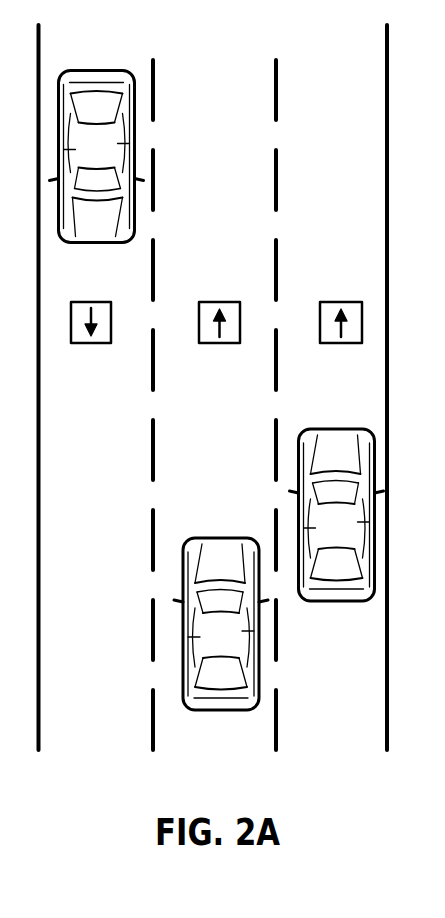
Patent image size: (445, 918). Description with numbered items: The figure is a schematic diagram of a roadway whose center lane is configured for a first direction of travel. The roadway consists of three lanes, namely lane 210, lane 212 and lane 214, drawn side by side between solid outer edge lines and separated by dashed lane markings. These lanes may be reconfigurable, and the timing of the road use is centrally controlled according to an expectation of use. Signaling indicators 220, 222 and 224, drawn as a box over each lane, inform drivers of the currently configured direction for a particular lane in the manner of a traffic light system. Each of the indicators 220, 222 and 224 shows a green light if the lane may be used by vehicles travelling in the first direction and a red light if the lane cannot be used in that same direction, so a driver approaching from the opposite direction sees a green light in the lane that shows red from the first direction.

The lane 210 is at (97, 725).
The lane 212 is at (222, 725).
The lane 214 is at (343, 725).
The indicator 220 is at (92, 343).
The indicator 222 is at (223, 343).
The indicator 224 is at (337, 343).